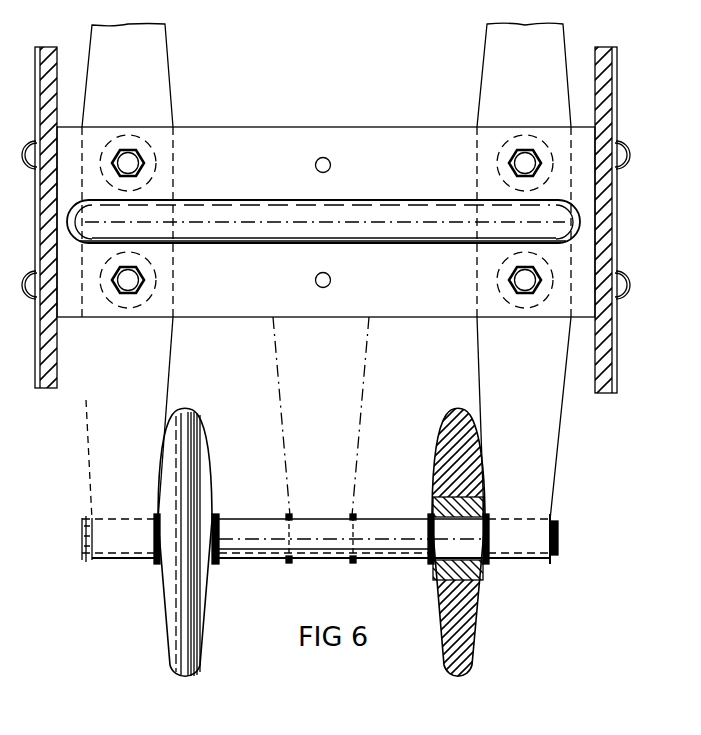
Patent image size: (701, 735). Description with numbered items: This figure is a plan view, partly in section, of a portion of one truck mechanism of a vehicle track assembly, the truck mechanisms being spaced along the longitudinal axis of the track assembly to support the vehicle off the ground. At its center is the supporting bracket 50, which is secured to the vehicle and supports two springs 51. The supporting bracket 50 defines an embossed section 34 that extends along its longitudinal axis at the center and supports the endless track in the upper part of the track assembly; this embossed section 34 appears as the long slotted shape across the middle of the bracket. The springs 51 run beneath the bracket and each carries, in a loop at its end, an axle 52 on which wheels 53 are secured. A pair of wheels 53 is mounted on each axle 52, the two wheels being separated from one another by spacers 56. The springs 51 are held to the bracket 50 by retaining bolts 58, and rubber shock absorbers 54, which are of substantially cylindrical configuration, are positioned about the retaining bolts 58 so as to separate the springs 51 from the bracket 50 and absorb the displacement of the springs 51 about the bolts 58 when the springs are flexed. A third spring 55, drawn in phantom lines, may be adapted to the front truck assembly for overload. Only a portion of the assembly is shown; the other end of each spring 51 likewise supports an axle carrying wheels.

The embossed section 34 is at (381, 203).
The supporting bracket 50 is at (403, 317).
The springs 51 is at (162, 356).
The axle 52 is at (560, 538).
The wheels 53 is at (205, 594).
The rubber shock absorbers 54 is at (498, 177).
The third spring 55 is at (354, 427).
The spacers 56 is at (247, 527).
The retaining bolts 58 is at (508, 165).